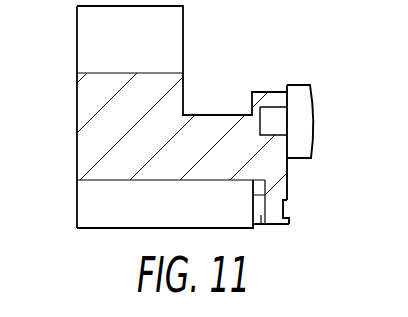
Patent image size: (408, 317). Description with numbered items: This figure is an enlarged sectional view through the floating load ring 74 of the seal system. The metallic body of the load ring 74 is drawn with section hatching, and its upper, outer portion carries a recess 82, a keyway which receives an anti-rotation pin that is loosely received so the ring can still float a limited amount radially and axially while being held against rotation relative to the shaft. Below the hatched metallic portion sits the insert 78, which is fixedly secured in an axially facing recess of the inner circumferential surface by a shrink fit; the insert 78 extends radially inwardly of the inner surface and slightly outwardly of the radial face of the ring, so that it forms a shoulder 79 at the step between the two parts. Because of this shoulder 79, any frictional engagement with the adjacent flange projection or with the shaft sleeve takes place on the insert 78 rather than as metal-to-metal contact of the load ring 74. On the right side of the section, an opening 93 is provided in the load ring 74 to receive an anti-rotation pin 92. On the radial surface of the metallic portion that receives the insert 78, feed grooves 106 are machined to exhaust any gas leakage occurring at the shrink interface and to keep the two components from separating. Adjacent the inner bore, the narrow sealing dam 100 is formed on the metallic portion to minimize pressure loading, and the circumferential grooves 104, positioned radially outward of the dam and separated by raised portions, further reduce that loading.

The load ring 74 is at (76, 128).
The recess 82 is at (107, 35).
The shoulder 79 is at (77, 180).
The insert 78 is at (110, 214).
The openings 93 is at (271, 108).
The anti-rotation pins 92 is at (302, 112).
The feed grooves 106 is at (266, 195).
The circumferential grooves 104 is at (288, 210).
The sealing dam 100 is at (289, 222).